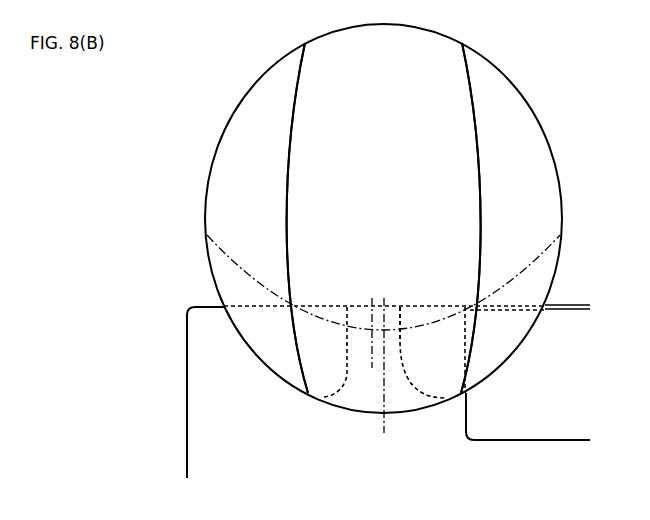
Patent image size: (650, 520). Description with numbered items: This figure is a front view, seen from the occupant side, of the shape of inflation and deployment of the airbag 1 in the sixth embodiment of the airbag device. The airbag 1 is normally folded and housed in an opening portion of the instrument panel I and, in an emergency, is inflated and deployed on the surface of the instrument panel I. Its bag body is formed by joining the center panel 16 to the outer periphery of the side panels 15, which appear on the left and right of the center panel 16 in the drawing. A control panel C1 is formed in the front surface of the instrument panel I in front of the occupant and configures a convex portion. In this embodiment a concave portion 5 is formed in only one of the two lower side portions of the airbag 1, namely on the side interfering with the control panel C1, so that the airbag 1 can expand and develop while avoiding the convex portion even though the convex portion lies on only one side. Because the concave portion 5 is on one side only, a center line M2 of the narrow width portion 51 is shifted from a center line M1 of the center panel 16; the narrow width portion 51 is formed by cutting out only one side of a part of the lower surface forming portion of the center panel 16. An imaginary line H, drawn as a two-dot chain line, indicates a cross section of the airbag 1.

The airbag 1 is at (529, 45).
The side panel 15 is at (258, 162).
The center panel 16 is at (390, 162).
The concave portion 5 is at (438, 350).
The narrow width portion 51 is at (400, 318).
The imaginary line H is at (248, 278).
The instrument panel I is at (185, 348).
The control panel C1 is at (517, 442).
The center line of center panel M1 is at (385, 378).
The center line of narrow width portion M2 is at (371, 345).